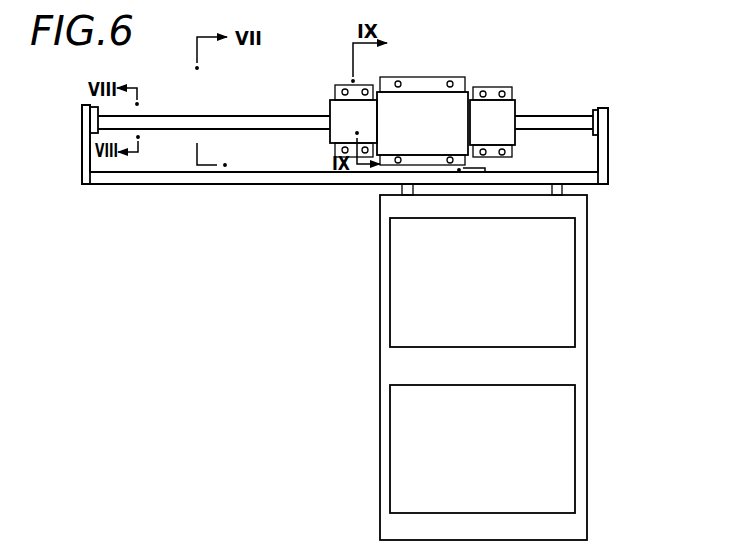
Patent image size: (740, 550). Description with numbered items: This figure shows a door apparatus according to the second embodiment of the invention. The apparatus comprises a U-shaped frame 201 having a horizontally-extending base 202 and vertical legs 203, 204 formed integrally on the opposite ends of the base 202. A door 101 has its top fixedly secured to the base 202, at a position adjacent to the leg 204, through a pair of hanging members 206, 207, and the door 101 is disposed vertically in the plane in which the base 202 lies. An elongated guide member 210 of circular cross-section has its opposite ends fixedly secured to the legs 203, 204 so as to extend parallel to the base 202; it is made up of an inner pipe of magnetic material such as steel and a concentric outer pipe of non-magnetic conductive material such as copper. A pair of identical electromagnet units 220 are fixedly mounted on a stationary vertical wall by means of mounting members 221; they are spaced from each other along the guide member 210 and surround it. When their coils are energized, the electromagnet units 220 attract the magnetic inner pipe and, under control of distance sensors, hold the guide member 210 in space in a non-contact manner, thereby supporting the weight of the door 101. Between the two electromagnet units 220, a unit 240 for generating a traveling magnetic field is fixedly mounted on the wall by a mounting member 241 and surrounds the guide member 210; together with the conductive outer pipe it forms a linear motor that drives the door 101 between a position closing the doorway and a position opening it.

The door 101 is at (586, 368).
The U-shaped frame 201 is at (617, 135).
The base 202 is at (288, 184).
The vertical leg 203 is at (82, 137).
The vertical leg 204 is at (612, 168).
The hanging member 206 is at (384, 188).
The hanging member 207 is at (585, 189).
The elongated guide member 210 is at (227, 116).
The electromagnet unit 220 is at (327, 100).
The mounting member 221 is at (343, 84).
The unit for generating traveling magnetic field 240 is at (422, 78).
The mounting member 241 is at (381, 78).